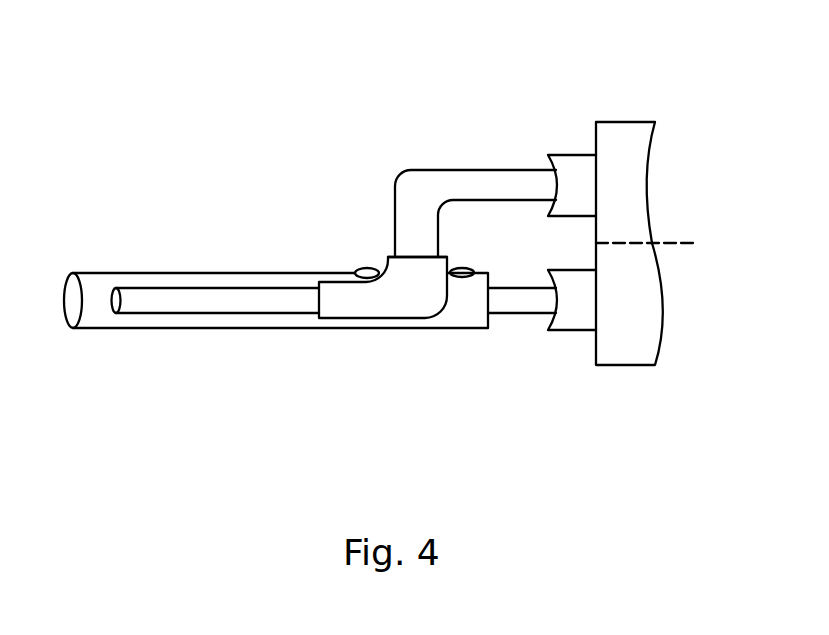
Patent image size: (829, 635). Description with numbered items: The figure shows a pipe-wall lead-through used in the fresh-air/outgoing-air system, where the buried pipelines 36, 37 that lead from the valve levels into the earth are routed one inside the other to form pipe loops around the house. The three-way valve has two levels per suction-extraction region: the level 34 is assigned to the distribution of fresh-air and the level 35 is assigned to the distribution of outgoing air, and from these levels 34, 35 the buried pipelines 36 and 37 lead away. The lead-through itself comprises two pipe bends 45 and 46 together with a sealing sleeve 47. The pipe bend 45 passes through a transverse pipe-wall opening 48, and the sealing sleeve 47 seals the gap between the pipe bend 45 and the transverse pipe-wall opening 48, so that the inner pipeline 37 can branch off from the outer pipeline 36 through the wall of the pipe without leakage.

The level 34 is at (618, 133).
The level 35 is at (618, 351).
The buried pipeline 36 is at (190, 273).
The buried pipeline 37 is at (163, 300).
The pipe bend 45 is at (395, 302).
The pipe bend 46 is at (416, 190).
The sealing sleeve 47 is at (368, 273).
The transverse pipe-wall opening 48 is at (395, 257).